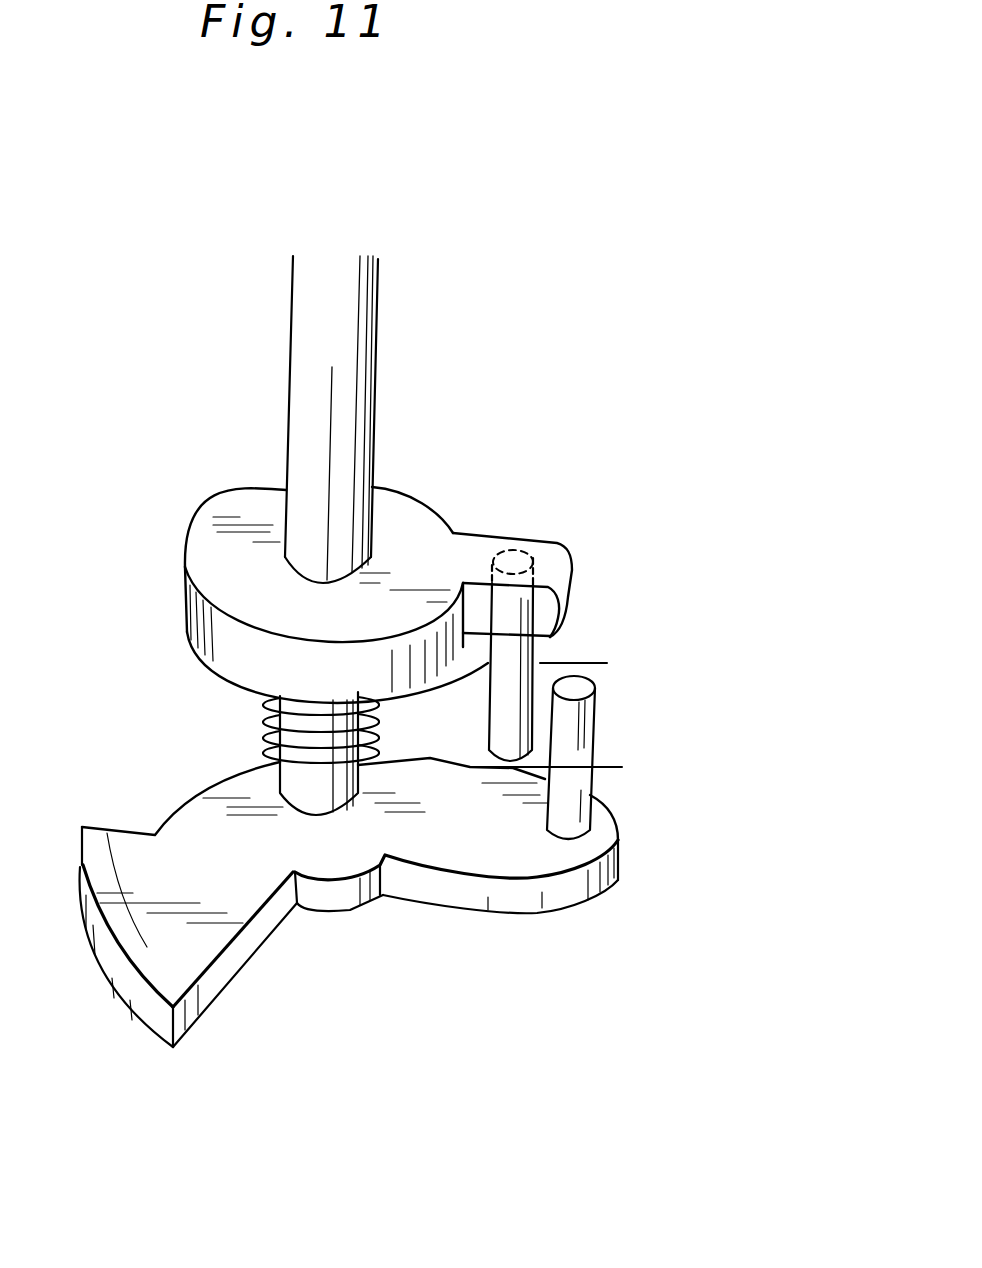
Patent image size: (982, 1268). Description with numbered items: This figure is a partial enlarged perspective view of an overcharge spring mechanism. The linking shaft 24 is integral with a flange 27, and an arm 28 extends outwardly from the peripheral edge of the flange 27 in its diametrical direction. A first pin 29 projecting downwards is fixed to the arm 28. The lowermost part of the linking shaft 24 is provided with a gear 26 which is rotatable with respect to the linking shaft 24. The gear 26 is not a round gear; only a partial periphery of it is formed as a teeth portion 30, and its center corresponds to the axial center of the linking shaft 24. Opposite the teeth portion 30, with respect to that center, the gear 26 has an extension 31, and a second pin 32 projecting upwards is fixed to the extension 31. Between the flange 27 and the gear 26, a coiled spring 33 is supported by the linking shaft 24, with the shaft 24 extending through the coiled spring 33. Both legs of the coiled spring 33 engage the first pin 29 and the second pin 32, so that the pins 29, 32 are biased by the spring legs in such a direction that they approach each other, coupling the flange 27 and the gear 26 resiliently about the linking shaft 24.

The linking shaft 24 is at (303, 378).
The gear 26 is at (335, 853).
The flange 27 is at (208, 550).
The arm 28 is at (545, 538).
The first pin 29 is at (512, 653).
The teeth portion 30 is at (195, 953).
The extension 31 is at (507, 852).
The second pin 32 is at (577, 790).
The coiled spring 33 is at (262, 735).